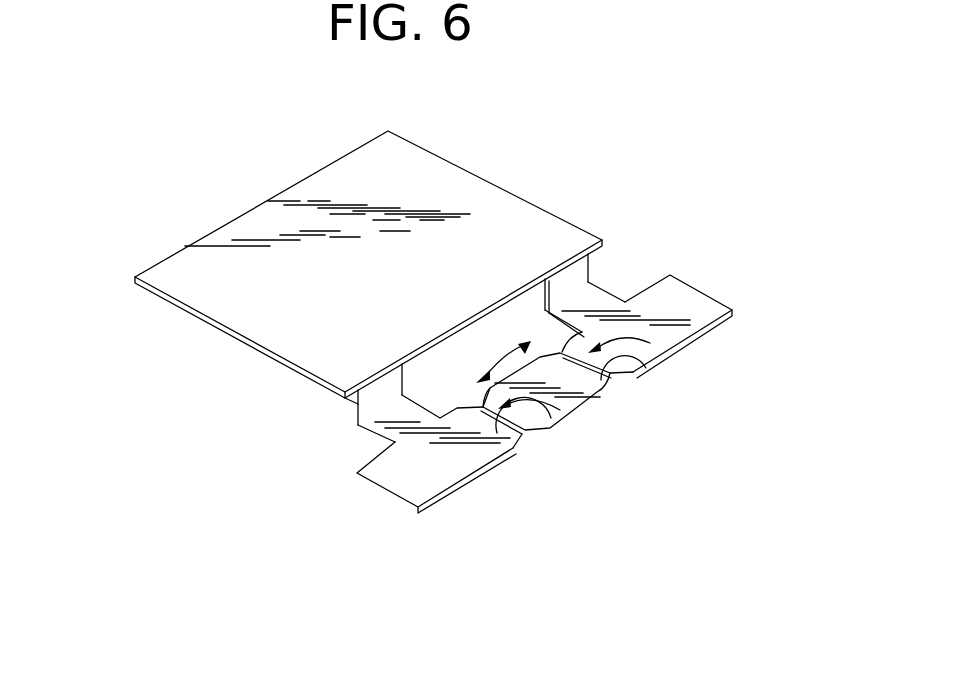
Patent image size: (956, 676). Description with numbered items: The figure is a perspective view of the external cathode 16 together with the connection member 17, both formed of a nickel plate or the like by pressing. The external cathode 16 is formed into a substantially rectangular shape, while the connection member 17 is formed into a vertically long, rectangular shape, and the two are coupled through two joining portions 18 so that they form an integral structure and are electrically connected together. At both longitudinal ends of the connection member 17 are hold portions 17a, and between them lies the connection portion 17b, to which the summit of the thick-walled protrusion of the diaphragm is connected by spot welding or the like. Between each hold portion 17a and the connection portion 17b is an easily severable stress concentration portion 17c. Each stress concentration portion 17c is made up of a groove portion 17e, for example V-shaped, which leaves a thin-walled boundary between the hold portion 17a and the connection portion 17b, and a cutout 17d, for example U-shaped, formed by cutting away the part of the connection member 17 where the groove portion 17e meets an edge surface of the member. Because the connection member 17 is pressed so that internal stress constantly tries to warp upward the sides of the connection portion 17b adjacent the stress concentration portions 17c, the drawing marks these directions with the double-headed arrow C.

The external cathode 16 is at (478, 198).
The connection member 17 is at (527, 413).
The hold portion 17a is at (682, 303).
The connection portion 17b is at (562, 400).
The stress concentration portion 17c is at (646, 368).
The cutout 17d is at (557, 349).
The groove portion 17e is at (648, 380).
The joining portion 18 is at (603, 303).
The double-headed arrow C is at (504, 368).